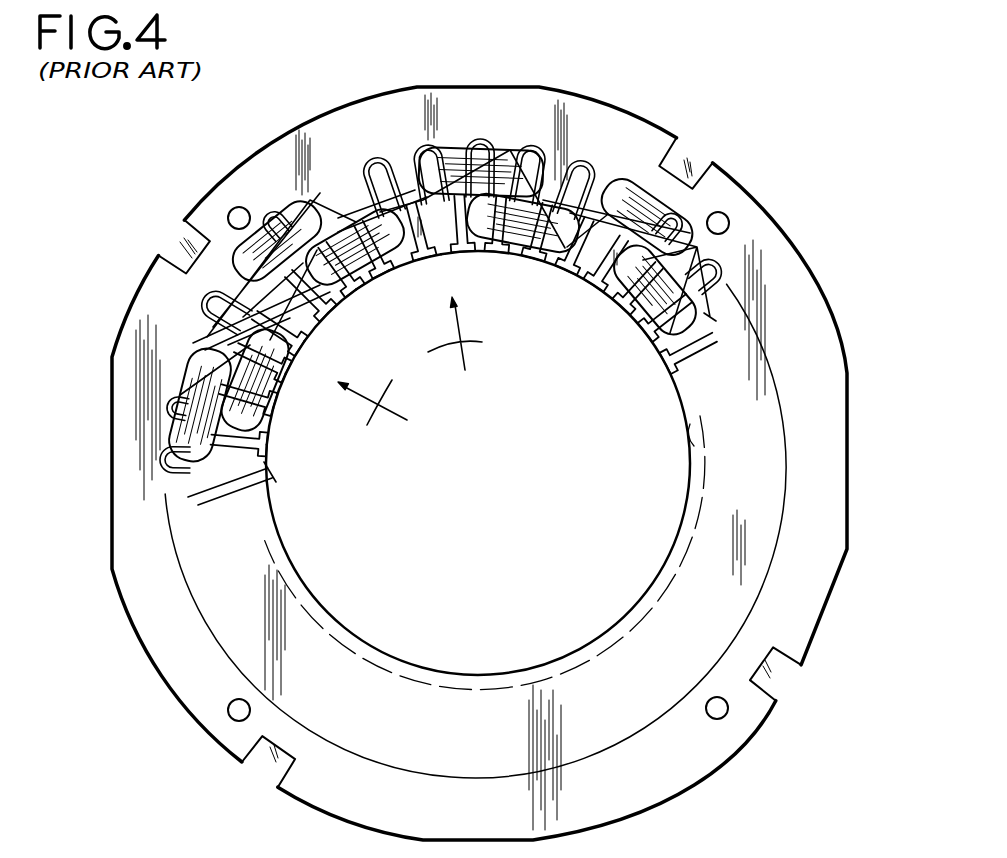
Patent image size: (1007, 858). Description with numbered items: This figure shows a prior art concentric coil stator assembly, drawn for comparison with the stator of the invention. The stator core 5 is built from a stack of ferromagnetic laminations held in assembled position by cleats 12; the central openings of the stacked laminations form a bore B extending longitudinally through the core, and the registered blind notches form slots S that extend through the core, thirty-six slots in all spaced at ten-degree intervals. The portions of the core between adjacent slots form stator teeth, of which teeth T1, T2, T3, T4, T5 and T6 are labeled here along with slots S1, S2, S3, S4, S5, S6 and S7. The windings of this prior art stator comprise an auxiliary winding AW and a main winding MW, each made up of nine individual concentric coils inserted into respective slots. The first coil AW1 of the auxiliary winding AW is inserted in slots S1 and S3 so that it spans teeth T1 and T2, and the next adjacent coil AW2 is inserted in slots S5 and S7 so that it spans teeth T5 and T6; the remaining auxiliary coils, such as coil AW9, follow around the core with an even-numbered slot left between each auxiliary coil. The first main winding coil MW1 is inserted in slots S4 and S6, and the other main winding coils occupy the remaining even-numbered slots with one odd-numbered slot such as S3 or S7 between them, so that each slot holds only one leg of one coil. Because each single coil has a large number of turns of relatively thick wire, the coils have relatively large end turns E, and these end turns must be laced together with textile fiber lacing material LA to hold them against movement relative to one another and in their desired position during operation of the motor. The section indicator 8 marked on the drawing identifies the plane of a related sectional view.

The core 5 is at (803, 252).
The cleats 12 is at (700, 150).
The bore B is at (700, 440).
The end turns E is at (448, 165).
The slots S is at (382, 157).
The auxiliary winding AW is at (272, 212).
The first coil of the auxiliary winding AW1 is at (320, 190).
The next adjacent coil of the auxiliary winding AW2 is at (195, 402).
The auxiliary winding coil AW9 is at (514, 148).
The main winding MW is at (602, 166).
The first main winding coil MW1 is at (250, 366).
The lacing material LA is at (380, 252).
The slot S1 is at (326, 193).
The slot S2 is at (281, 223).
The slot S3 is at (239, 258).
The slot S4 is at (208, 306).
The slot S5 is at (185, 359).
The slot S6 is at (172, 417).
The slot S7 is at (169, 464).
The stator tooth T1 is at (346, 276).
The stator tooth T2 is at (320, 301).
The stator tooth T3 is at (291, 334).
The stator tooth T4 is at (274, 364).
The stator tooth T5 is at (261, 399).
The stator tooth T6 is at (257, 443).
The section line 8 is at (412, 371).